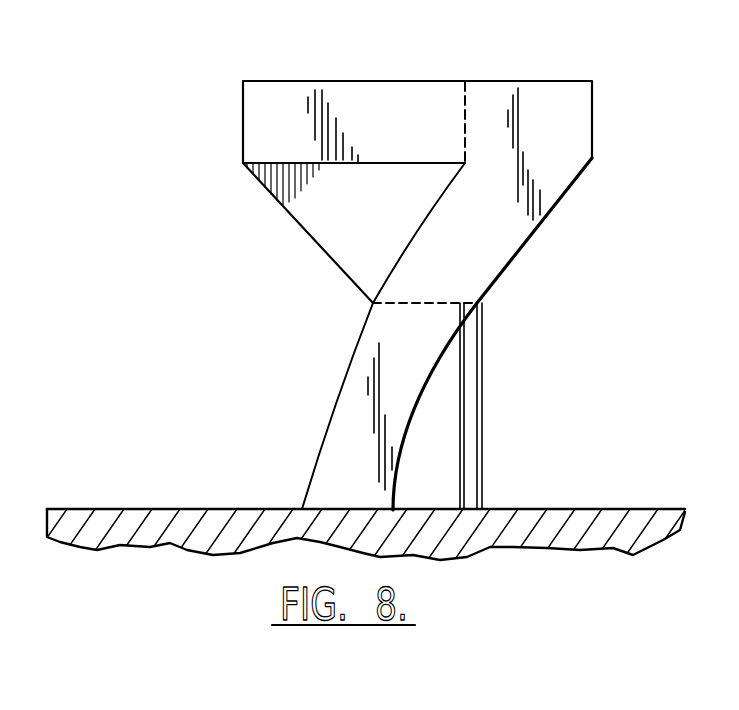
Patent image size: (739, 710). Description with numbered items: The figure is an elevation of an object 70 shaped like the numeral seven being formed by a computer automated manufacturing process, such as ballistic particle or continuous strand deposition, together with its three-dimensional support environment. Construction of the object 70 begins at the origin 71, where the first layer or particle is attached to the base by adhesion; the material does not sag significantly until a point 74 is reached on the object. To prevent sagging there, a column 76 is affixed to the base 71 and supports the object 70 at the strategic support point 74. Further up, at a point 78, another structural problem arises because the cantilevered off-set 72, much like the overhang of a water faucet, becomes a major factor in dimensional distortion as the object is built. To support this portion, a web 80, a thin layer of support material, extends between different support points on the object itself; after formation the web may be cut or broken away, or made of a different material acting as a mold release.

The object 70 is at (548, 207).
The origin 71 is at (301, 508).
The cantilevered off-set 72 is at (360, 81).
The point 74 is at (478, 303).
The column 76 is at (483, 413).
The point 78 is at (465, 82).
The web 80 is at (391, 216).